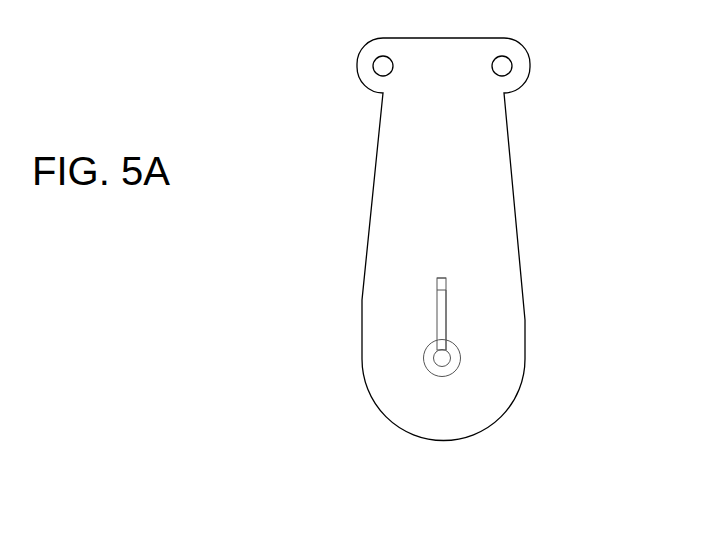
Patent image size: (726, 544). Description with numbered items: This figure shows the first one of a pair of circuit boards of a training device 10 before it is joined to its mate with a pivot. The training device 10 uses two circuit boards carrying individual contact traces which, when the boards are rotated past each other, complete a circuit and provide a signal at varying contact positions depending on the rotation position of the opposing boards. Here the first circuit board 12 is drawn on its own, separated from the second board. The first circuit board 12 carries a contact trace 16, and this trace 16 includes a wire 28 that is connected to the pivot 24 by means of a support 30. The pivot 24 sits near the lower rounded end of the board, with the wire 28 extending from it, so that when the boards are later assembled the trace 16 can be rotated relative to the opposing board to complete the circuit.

The training device 10 is at (352, 289).
The first circuit board 12 is at (532, 310).
The contact trace 16 is at (450, 328).
The pivot 24 is at (435, 362).
The wire 28 is at (433, 312).
The support 30 is at (433, 292).